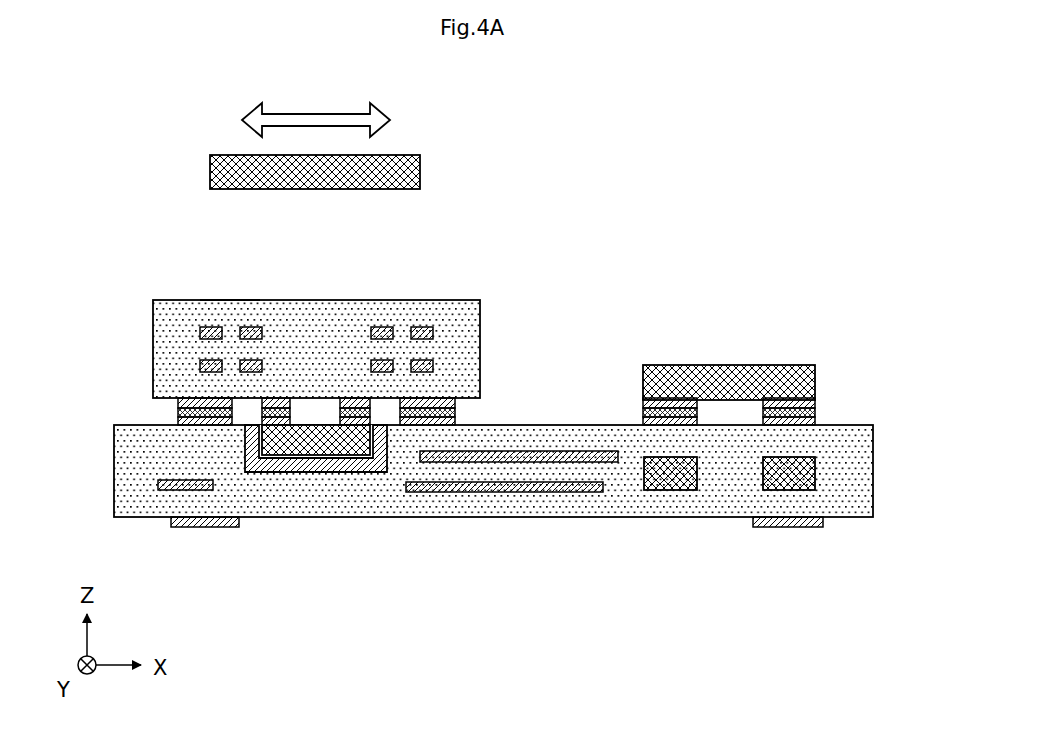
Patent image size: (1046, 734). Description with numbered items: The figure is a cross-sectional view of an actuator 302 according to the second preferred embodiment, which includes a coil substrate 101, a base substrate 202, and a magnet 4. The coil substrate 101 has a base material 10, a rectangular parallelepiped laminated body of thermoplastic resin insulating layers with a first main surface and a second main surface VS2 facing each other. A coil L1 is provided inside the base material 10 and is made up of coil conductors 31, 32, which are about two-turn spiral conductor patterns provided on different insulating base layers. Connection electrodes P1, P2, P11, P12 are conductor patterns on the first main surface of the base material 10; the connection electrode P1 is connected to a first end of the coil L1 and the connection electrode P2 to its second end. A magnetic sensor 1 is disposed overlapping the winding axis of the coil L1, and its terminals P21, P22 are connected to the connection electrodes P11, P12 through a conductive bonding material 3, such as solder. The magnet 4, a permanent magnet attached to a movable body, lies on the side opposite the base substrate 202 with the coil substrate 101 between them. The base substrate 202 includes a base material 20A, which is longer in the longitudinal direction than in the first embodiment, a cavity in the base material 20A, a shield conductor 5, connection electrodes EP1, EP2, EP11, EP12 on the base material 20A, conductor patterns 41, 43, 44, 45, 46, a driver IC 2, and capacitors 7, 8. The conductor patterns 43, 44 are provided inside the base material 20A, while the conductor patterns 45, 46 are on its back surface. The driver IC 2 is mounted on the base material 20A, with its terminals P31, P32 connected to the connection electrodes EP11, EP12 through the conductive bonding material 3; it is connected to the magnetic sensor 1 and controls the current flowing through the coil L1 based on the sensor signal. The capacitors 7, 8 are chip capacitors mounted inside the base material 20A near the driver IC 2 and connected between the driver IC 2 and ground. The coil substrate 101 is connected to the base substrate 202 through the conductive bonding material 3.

The actuator 302 is at (898, 95).
The magnet 4 is at (420, 158).
The coil substrate 101 is at (434, 289).
The base material 10 is at (480, 300).
The second main surface VS2 is at (228, 297).
The coil L1 is at (190, 217).
The coil conductor 31 is at (200, 366).
The coil conductor 32 is at (200, 334).
The connection electrode P1 is at (178, 399).
The connection electrode P11 is at (278, 399).
The connection electrode P12 is at (354, 399).
The connection electrode P2 is at (440, 399).
The driver IC 2 is at (765, 365).
The terminal P31 is at (655, 398).
The terminal P32 is at (795, 399).
The conductive bonding material 3 is at (178, 412).
The base substrate 202 is at (600, 531).
The base material 20A is at (873, 517).
The shield conductor 5 is at (318, 468).
The magnetic sensor 1 is at (386, 464).
The connection electrode EP1 is at (178, 421).
The terminal P21 is at (274, 425).
The terminal P22 is at (358, 425).
The connection electrode EP2 is at (455, 421).
The connection electrode EP11 is at (643, 421).
The connection electrode EP12 is at (815, 421).
The conductor pattern 41 is at (158, 485).
The conductor pattern 43 is at (550, 462).
The conductor pattern 44 is at (478, 492).
The capacitor 7 is at (673, 488).
The capacitor 8 is at (763, 470).
The conductor pattern 45 is at (206, 527).
The conductor pattern 46 is at (787, 527).